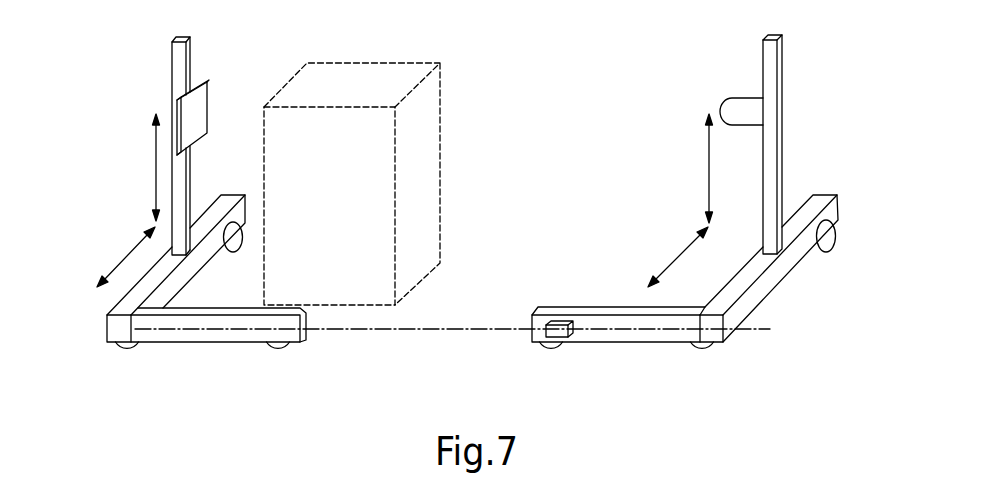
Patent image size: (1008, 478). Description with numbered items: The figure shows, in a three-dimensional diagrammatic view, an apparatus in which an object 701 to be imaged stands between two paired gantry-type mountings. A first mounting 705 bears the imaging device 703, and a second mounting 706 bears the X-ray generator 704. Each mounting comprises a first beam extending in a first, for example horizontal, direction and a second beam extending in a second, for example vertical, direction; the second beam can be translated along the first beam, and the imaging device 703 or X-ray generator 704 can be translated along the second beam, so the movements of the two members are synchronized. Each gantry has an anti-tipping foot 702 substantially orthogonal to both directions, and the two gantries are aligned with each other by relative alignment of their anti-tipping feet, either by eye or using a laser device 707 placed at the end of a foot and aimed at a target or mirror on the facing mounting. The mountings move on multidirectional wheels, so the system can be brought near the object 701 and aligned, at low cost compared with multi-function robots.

The object 701 is at (442, 108).
The anti-tipping foot 702 is at (303, 333).
The imaging device 703 is at (211, 101).
The X-ray generator 704 is at (737, 98).
The first mounting 705 is at (147, 270).
The second mounting 706 is at (793, 273).
The laser device 707 is at (573, 333).